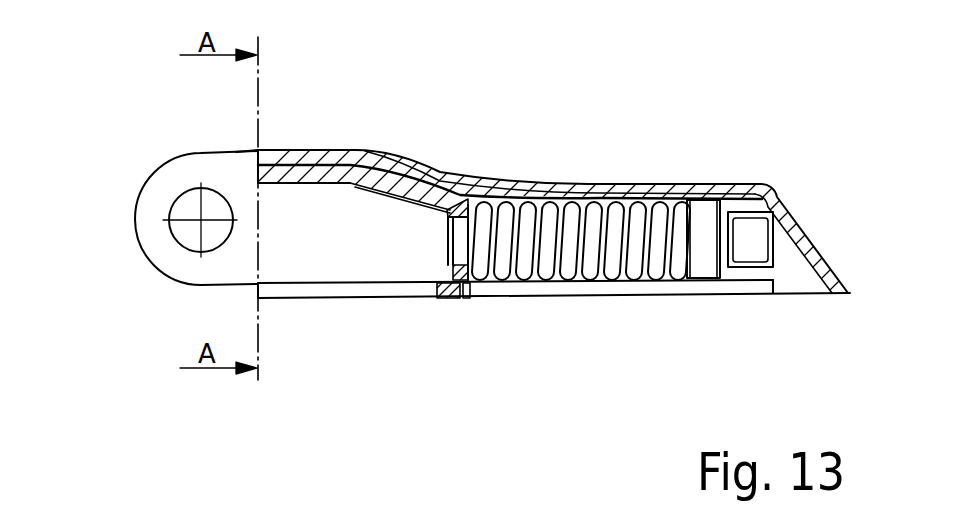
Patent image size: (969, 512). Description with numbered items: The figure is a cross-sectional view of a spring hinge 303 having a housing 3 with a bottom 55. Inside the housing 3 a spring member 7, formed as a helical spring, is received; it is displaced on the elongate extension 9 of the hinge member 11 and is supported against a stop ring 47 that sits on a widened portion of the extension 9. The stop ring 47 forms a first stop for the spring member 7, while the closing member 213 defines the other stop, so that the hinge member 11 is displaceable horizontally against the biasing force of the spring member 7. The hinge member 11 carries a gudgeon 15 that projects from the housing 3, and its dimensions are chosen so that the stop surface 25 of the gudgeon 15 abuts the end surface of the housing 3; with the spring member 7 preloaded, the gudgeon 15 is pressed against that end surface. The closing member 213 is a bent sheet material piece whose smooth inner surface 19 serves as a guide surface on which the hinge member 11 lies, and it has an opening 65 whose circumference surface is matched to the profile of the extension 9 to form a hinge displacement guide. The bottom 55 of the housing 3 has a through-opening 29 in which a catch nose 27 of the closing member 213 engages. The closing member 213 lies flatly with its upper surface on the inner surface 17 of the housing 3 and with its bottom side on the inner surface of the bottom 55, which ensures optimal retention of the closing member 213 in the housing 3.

The housing 3 is at (774, 194).
The spring member 7 is at (507, 283).
The elongate extension 9 is at (743, 240).
The hinge member 11 is at (335, 248).
The gudgeon 15 is at (155, 210).
The inner surface 17 is at (308, 160).
The inner surface 19 is at (313, 283).
The stop surface 25 is at (240, 157).
The catch nose 27 is at (447, 298).
The through-opening 29 is at (470, 297).
The stop ring 47 is at (707, 230).
The bottom 55 is at (575, 288).
The opening 65 is at (463, 195).
The closing member 213 is at (395, 197).
The spring hinge 303 is at (577, 140).